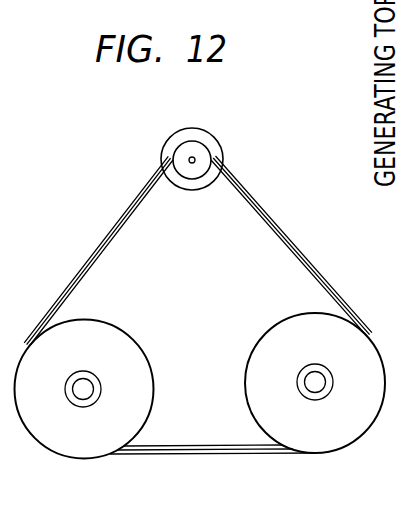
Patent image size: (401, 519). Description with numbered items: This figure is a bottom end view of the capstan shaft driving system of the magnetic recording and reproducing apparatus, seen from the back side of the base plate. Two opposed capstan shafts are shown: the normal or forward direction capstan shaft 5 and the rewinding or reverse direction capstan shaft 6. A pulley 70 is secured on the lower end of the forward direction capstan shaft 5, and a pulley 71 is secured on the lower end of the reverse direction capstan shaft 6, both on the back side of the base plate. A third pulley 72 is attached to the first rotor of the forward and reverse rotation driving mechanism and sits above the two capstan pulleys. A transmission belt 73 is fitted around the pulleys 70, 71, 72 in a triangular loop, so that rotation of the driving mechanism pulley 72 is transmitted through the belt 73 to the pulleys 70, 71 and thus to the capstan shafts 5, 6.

The pulley 72 is at (202, 151).
The transmission belt 73 is at (249, 196).
The pulley 70 is at (128, 336).
The pulley 71 is at (263, 336).
The forward direction capstan shaft 5 is at (87, 388).
The reverse direction capstan shaft 6 is at (318, 380).